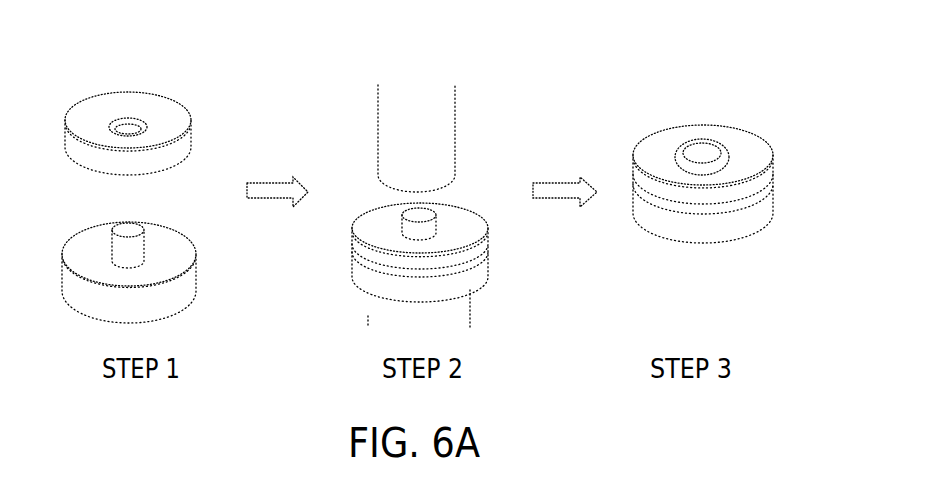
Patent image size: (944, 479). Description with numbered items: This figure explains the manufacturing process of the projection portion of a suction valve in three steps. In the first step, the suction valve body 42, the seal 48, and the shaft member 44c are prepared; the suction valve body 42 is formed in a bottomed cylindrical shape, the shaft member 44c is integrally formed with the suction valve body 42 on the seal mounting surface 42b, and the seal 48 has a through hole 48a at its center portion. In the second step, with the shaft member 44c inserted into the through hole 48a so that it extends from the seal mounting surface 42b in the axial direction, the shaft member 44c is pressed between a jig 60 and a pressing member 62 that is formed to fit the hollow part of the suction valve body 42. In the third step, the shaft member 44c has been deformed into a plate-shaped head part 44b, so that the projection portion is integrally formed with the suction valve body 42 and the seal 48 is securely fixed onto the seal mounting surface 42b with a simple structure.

The suction valve body 42 is at (157, 310).
The seal mounting surface 42b is at (157, 255).
The head part 44b is at (702, 150).
The shaft member 44c is at (127, 223).
The seal 48 is at (173, 131).
The through hole 48a is at (129, 128).
The jig 60 is at (457, 312).
The pressing member 62 is at (440, 102).